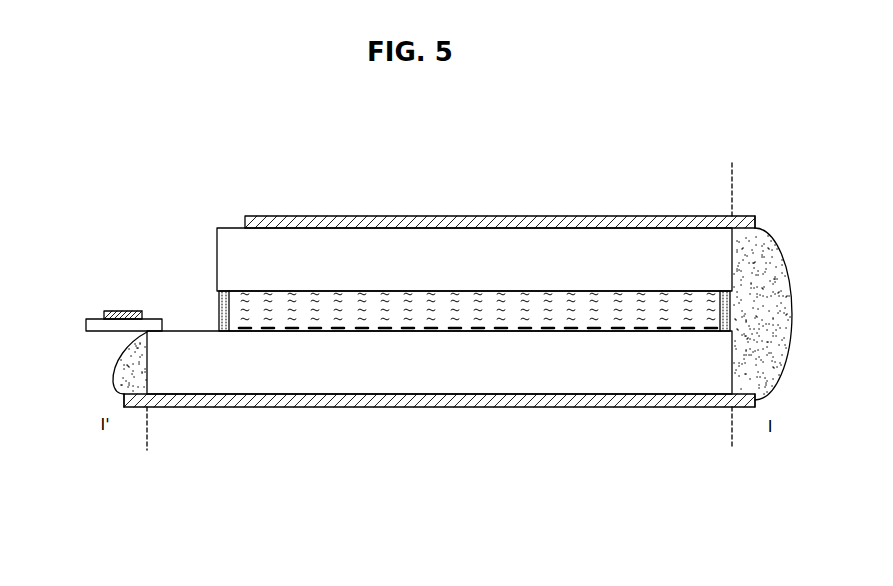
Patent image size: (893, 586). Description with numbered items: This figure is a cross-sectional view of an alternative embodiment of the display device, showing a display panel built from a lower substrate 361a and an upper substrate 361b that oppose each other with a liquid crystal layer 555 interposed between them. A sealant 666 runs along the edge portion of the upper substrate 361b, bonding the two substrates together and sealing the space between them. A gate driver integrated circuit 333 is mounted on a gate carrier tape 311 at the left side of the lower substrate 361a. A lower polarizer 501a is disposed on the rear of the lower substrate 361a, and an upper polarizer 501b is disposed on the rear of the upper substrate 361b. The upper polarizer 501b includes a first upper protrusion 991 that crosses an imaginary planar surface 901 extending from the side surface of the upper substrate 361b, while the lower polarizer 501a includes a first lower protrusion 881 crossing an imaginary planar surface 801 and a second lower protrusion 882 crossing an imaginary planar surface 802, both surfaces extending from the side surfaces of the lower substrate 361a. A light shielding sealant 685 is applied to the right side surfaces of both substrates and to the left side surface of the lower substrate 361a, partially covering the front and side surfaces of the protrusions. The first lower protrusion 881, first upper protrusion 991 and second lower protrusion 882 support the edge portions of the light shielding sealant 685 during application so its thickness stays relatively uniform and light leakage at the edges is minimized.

The upper polarizer 501b is at (413, 217).
The upper substrate 361b is at (547, 257).
The sealant 666 is at (220, 311).
The liquid crystal layer 555 is at (378, 322).
The lower substrate 361a is at (532, 365).
The lower polarizer 501a is at (472, 398).
The gate carrier tape 311 is at (108, 331).
The gate driver integrated circuit 333 is at (125, 310).
The light shielding sealant 685 is at (128, 357).
The imaginary planar surface 901 is at (730, 190).
The first upper protrusion 991 is at (740, 215).
The imaginary planar surface 801 is at (732, 425).
The first lower protrusion 881 is at (740, 408).
The imaginary planar surface 802 is at (148, 432).
The second lower protrusion 882 is at (133, 405).